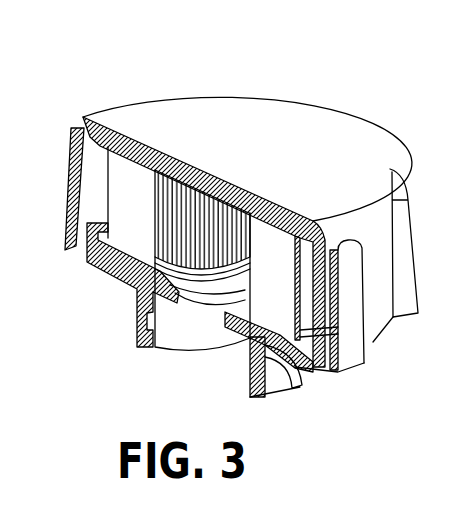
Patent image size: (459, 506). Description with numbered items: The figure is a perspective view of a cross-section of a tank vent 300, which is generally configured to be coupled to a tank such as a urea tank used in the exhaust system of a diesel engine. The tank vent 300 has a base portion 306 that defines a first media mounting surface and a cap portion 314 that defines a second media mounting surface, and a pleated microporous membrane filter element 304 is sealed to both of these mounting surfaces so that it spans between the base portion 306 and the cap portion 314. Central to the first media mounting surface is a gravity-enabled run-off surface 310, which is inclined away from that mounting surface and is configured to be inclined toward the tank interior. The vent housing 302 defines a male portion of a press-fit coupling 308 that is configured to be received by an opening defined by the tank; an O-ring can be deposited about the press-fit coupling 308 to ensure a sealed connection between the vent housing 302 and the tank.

The tank vent 300 is at (329, 74).
The vent housing 302 is at (380, 316).
The pleated microporous membrane filter element 304 is at (118, 208).
The base portion 306 is at (121, 301).
The press-fit coupling 308 is at (288, 380).
The gravity-enabled run-off surface 310 is at (185, 285).
The cap portion 314 is at (322, 152).